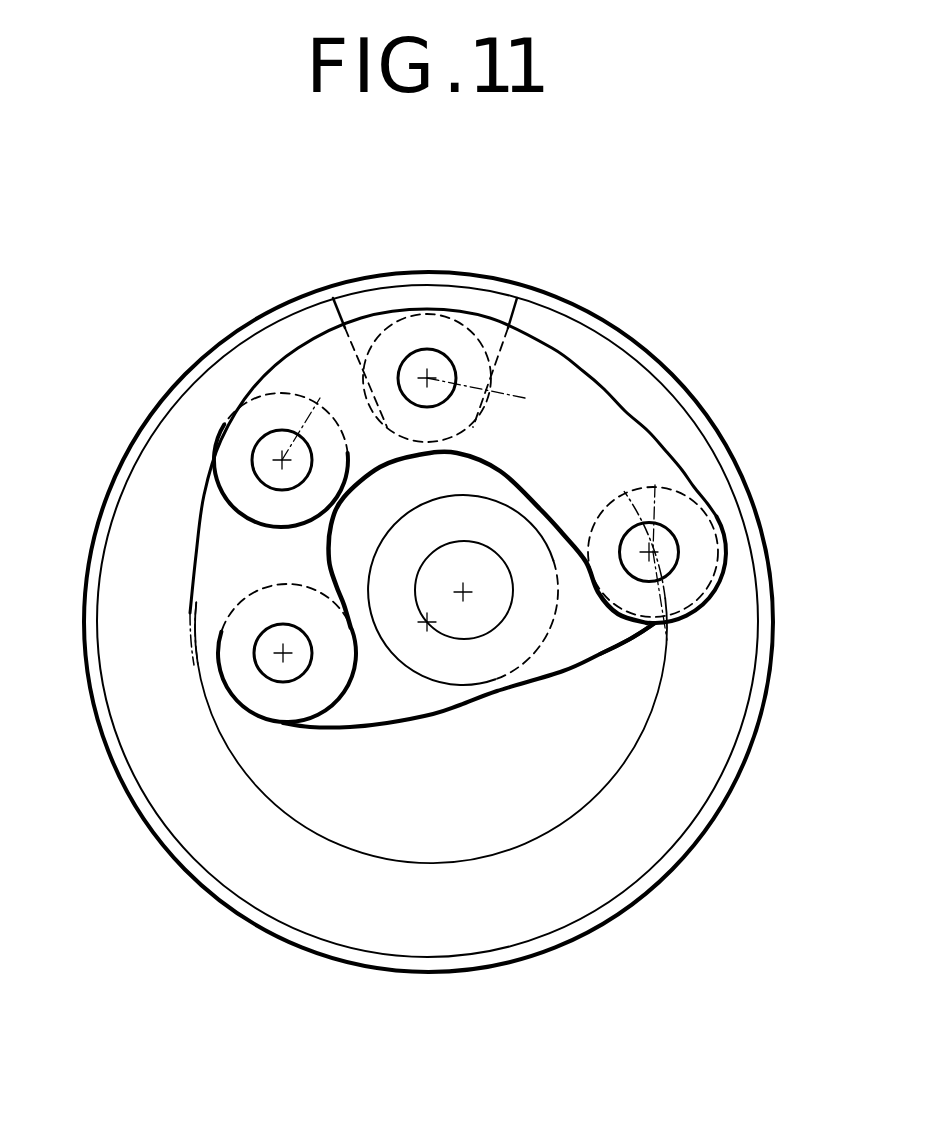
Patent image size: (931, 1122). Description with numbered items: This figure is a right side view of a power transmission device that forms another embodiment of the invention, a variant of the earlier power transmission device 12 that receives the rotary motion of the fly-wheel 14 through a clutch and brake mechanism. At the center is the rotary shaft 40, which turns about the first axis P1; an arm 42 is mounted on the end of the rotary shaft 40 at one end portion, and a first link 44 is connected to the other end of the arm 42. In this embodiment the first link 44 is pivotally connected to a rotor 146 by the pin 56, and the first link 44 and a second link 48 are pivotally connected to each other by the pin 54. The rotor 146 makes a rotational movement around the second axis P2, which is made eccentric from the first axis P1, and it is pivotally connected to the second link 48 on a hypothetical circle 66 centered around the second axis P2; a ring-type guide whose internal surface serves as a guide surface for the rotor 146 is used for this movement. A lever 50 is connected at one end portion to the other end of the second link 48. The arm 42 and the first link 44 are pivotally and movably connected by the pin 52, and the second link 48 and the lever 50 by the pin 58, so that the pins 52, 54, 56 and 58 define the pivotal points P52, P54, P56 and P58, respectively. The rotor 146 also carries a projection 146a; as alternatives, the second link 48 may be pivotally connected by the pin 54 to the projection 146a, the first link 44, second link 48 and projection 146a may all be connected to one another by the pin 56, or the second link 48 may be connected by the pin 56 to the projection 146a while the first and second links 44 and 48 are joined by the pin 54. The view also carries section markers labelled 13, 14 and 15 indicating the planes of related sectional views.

The power transmission device 12 is at (784, 525).
The section line 13- 13 is at (398, 246).
The fly-wheel 14 is at (156, 368).
The section line 15- 15 is at (507, 573).
The rotary shaft 40 is at (490, 557).
The arm 42 is at (648, 646).
The first link 44 is at (610, 403).
The second link 48 is at (205, 585).
The lever 50 is at (381, 729).
The pin 52 is at (667, 563).
The pin 54 is at (262, 462).
The pin 56 is at (450, 365).
The pin 58 is at (273, 678).
The hypothetical circle 66 is at (540, 836).
The rotor 146 is at (587, 310).
The projection 146a is at (444, 378).
The first axis P1 is at (462, 590).
The second axis P2 is at (428, 625).
The pivotal point P52 is at (650, 549).
The pivotal point P54 is at (284, 455).
The pivotal point P56 is at (423, 372).
The pivotal point P58 is at (283, 653).